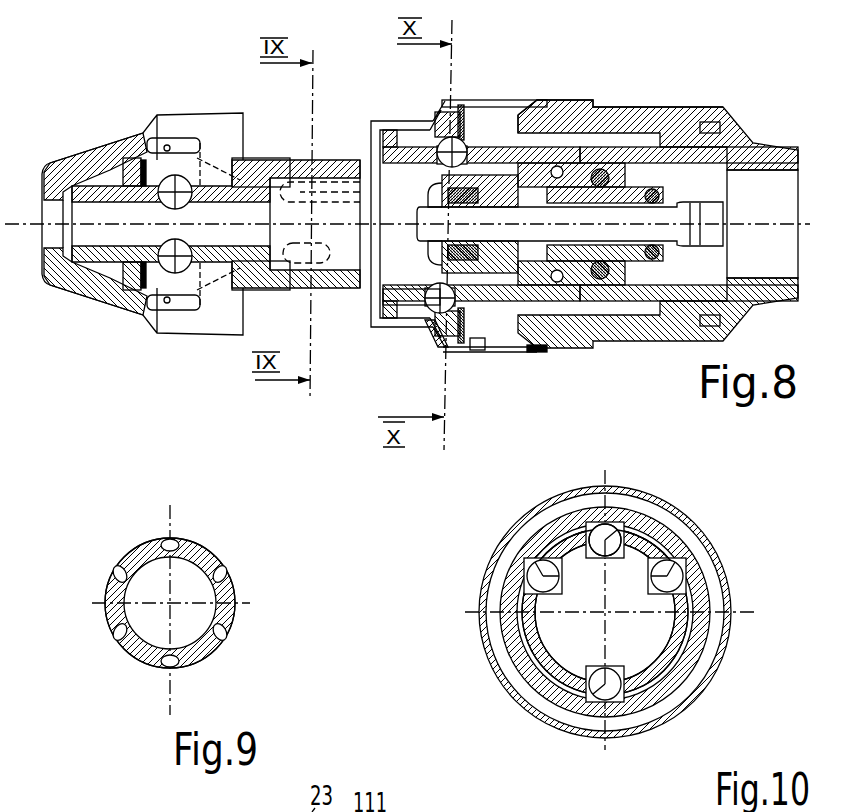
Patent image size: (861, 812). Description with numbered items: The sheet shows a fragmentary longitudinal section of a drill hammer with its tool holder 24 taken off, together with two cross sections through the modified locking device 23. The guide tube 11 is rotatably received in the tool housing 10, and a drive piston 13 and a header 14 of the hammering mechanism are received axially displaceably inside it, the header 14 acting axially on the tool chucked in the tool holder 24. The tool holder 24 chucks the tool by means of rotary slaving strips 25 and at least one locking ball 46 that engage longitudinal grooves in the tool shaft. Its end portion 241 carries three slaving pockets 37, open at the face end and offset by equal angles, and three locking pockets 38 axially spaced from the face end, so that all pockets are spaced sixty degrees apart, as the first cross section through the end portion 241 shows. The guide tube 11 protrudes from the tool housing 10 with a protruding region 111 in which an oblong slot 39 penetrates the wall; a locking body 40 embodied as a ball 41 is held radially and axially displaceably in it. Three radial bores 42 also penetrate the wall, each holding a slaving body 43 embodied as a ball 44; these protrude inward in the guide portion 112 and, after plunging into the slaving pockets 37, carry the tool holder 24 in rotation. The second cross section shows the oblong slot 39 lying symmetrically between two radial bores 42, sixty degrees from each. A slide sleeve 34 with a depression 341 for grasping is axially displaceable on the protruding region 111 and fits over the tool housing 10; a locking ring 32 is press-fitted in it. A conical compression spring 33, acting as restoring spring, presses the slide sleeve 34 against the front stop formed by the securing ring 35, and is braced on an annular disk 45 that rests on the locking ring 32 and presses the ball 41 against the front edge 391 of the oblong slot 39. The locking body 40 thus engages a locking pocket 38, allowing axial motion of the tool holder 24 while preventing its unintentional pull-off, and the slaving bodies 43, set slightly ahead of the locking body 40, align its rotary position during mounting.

In FIG. 8, the tool housing 10 is at (698, 120).
In FIG. 8, the guide tube 11 is at (635, 104).
In FIG. 10, the guide tube 11 is at (672, 693).
In FIG. 8, the drive piston 13 is at (773, 265).
In FIG. 8, the header 14 is at (617, 237).
In FIG. 8, the locking device 23 is at (428, 112).
In FIG. 8, the tool holder 24 is at (268, 150).
In FIG. 9, the tool holder 24 is at (150, 536).
In FIG. 8, the end portion 241 is at (292, 283).
In FIG. 9, the end portion 241 is at (140, 548).
In FIG. 8, the rotary slaving strips 25 is at (160, 322).
In FIG. 8, the locking ring 32 is at (433, 325).
In FIG. 10, the locking ring 32 is at (690, 633).
In FIG. 8, the conical compression spring 33 is at (488, 357).
In FIG. 8, the slide sleeve 34 is at (530, 355).
In FIG. 8, the depression 341 is at (488, 354).
In FIG. 8, the securing ring 35 is at (376, 123).
In FIG. 8, the slaving pockets 37 is at (322, 283).
In FIG. 9, the slaving pockets 37 is at (115, 568).
In FIG. 8, the locking pockets 38 is at (322, 158).
In FIG. 9, the locking pockets 38 is at (176, 540).
In FIG. 8, the oblong slot 39 is at (548, 106).
In FIG. 8, the front edge 391 is at (412, 123).
In FIG. 8, the locking body 40 is at (440, 168).
In FIG. 10, the locking body 40 is at (622, 512).
In FIG. 8, the ball 41 is at (468, 146).
In FIG. 10, the ball 41 is at (597, 537).
In FIG. 8, the radial bores 42 is at (435, 284).
In FIG. 10, the radial bores 42 is at (637, 537).
In FIG. 8, the slaving bodies 43 is at (410, 330).
In FIG. 10, the slaving bodies 43 is at (693, 553).
In FIG. 8, the ball 44 is at (388, 322).
In FIG. 10, the ball 44 is at (693, 586).
In FIG. 8, the annular disk 45 is at (502, 105).
In FIG. 8, the locking ball 46 is at (143, 133).
In FIG. 8, the protruding region 111 is at (478, 352).
In FIG. 10, the protruding region 111 is at (680, 660).
In FIG. 8, the guide portion 112 is at (403, 284).
In FIG. 10, the guide portion 112 is at (717, 670).